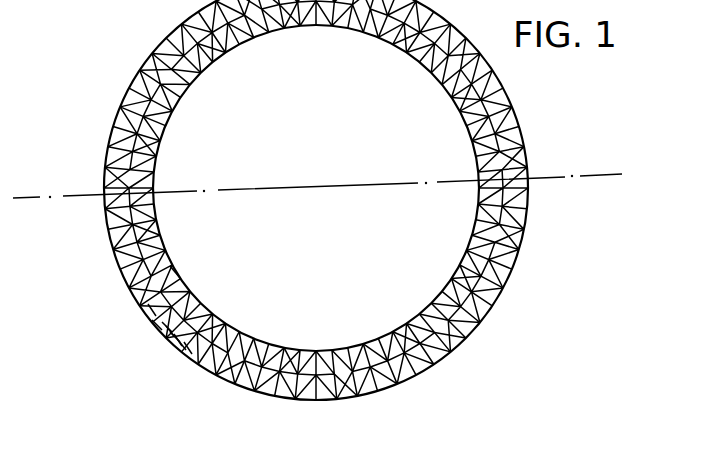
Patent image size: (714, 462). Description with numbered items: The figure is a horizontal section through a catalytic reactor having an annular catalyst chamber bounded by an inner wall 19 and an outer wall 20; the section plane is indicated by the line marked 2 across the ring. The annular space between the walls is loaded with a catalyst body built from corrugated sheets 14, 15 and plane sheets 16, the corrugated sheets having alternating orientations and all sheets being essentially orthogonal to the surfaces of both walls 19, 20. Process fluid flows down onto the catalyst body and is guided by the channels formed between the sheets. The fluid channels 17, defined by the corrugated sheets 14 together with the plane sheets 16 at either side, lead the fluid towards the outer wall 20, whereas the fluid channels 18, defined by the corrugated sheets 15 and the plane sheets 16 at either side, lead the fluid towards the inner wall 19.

The section line 2- 2 is at (25, 190).
The corrugated sheets 14 is at (152, 310).
The corrugated sheets 15 is at (157, 325).
The plane sheets 16 is at (175, 272).
The fluid channels 17 is at (167, 327).
The fluid channels 18 is at (178, 340).
The inner wall 19 is at (164, 224).
The outer wall 20 is at (104, 243).